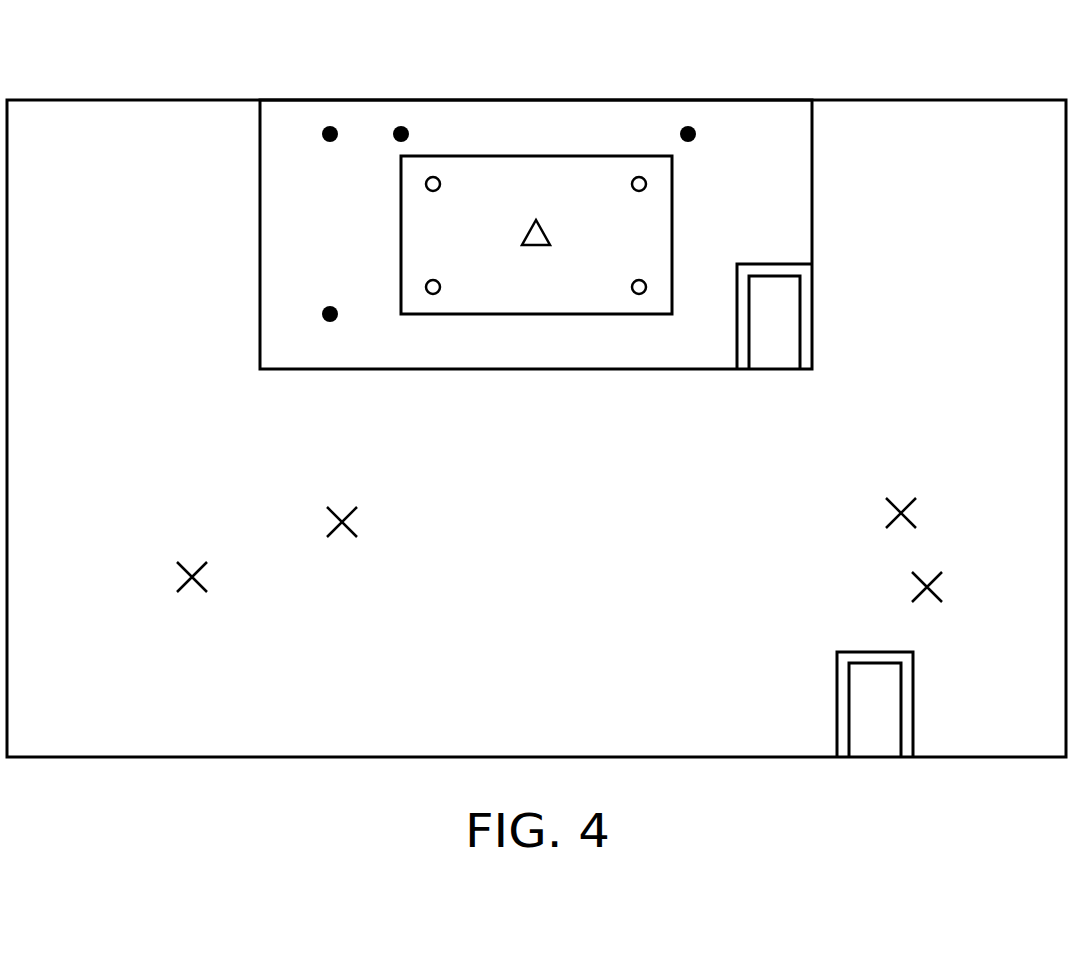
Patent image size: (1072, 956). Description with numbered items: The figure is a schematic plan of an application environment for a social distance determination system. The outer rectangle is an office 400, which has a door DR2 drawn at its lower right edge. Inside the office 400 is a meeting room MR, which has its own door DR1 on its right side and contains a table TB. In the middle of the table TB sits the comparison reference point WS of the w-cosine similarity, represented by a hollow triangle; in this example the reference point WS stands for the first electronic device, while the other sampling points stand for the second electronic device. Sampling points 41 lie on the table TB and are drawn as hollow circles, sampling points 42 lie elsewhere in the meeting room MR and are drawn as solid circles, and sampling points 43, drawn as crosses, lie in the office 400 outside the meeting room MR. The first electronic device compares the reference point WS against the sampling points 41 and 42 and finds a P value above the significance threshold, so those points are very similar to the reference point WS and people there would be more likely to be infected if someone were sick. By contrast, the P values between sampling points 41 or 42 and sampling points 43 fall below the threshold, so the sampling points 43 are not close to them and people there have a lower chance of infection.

The office 400 is at (937, 99).
The meeting room MR is at (735, 99).
The table TB is at (538, 155).
The comparison reference point WS is at (537, 247).
The sampling points 41 is at (433, 295).
The sampling points 42 is at (330, 322).
The sampling points 43 is at (350, 525).
The door DR1 is at (813, 318).
The door DR2 is at (915, 703).